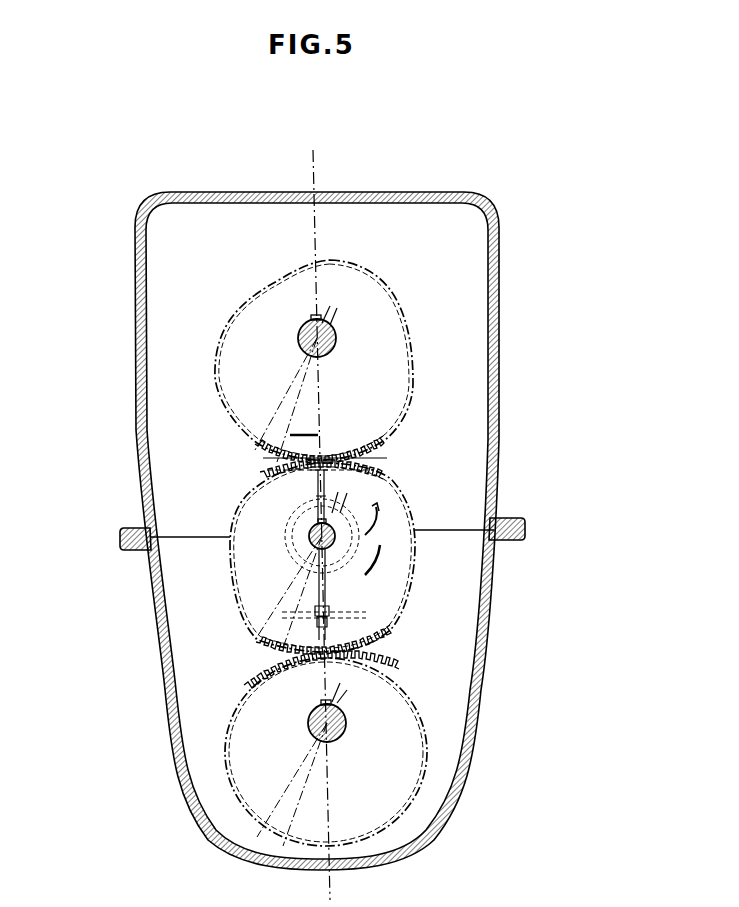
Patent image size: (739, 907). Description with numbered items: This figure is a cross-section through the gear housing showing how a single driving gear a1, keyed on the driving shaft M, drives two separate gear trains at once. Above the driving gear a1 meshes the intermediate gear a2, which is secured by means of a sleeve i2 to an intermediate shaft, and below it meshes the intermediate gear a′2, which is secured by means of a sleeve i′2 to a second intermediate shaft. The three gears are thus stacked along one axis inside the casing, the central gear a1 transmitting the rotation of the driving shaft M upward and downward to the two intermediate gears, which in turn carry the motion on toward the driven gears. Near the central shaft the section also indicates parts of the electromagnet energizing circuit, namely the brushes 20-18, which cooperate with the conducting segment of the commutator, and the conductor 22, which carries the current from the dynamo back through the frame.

The sleeve i2 is at (308, 334).
The intermediate gear a2 is at (375, 370).
The conductor 22 is at (322, 498).
The driving shaft M is at (312, 538).
The driving gear a1 is at (395, 555).
The brushes 20-18 is at (327, 567).
The intermediate gear a′2 is at (272, 745).
The sleeve i′2 is at (347, 725).